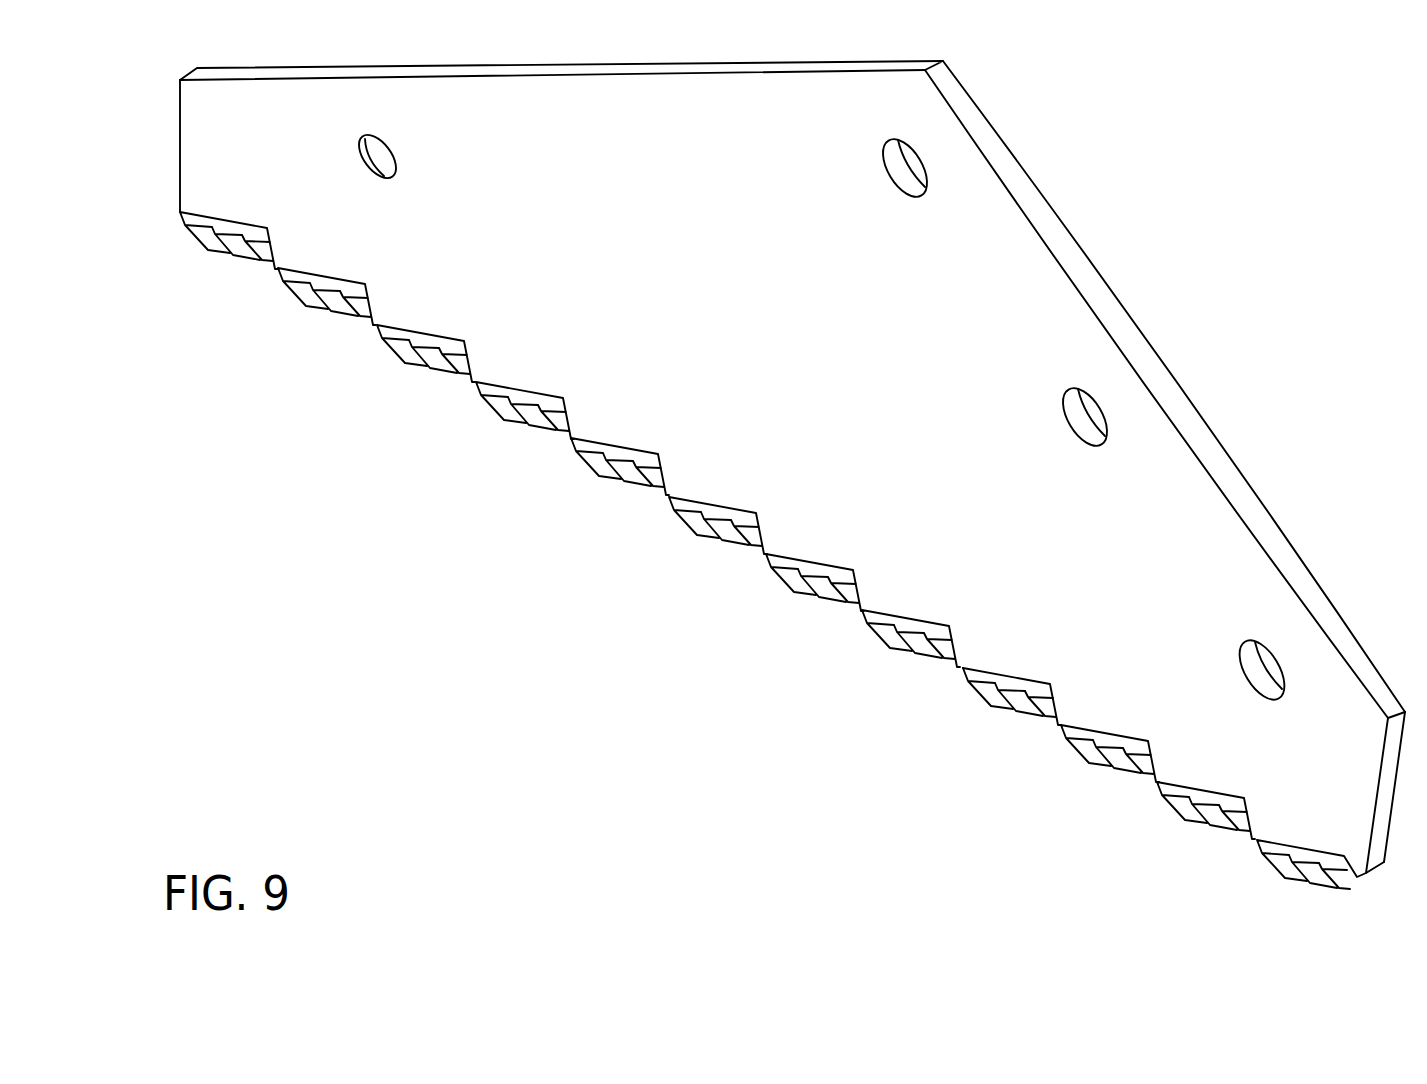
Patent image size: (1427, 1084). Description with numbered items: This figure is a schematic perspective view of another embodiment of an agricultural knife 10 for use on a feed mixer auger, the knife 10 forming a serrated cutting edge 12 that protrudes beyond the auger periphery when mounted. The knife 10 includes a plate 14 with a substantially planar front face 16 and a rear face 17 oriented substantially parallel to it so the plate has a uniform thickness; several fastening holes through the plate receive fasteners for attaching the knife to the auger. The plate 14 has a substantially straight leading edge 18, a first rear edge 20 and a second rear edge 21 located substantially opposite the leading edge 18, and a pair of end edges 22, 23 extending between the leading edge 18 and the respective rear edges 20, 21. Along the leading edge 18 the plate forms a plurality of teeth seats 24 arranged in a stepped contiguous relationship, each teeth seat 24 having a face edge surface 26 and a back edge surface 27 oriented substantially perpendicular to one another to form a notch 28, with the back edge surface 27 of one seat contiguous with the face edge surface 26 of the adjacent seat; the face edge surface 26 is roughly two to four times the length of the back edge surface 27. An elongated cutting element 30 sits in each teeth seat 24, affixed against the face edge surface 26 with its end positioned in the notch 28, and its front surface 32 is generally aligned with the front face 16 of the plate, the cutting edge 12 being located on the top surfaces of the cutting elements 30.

The knife 10 is at (1136, 144).
The serrated cutting edge 12 is at (718, 566).
The plate 14 is at (662, 383).
The front face 16 is at (1052, 288).
The rear face 17 is at (1107, 290).
The leading edge 18 is at (813, 565).
The first rear edge 20 is at (310, 73).
The second rear edge 21 is at (1125, 337).
The end edge 22 is at (180, 132).
The end edge 23 is at (1383, 858).
The teeth seat 24 is at (925, 670).
The face edge surface 26 is at (1003, 703).
The back edge surface 27 is at (1043, 710).
The notch 28 is at (1047, 683).
The cutting element 30 is at (1110, 752).
The front surface 32 is at (1172, 788).